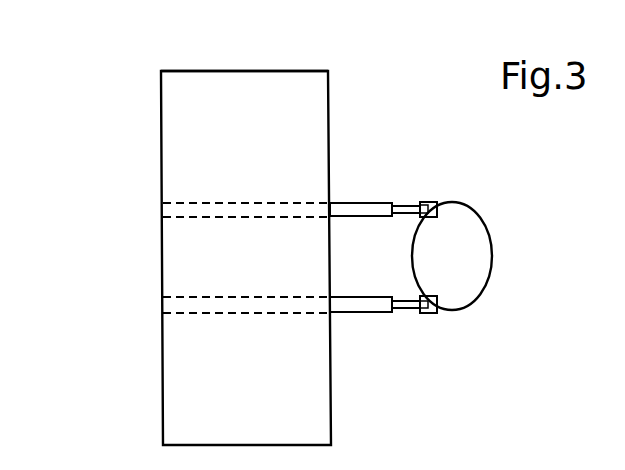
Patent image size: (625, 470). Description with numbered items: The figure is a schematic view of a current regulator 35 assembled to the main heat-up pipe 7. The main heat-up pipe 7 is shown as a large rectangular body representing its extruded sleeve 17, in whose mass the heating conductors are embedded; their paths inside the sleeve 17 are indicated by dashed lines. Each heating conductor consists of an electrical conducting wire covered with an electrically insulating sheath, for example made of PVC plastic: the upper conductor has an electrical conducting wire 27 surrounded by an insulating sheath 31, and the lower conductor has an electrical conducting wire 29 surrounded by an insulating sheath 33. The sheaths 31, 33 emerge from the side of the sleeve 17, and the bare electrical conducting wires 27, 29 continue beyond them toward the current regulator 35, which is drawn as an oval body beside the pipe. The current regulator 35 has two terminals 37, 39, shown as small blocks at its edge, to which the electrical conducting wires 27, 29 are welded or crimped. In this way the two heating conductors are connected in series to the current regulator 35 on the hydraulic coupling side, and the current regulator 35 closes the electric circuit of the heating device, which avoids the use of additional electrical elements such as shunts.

The main heat-up pipe 7 is at (134, 118).
The extruded sleeve 17 is at (265, 85).
The electrically insulating sheath 31 is at (350, 208).
The electrical conducting wire 27 is at (402, 208).
The terminal 37 is at (437, 202).
The current regulator 35 is at (482, 242).
The electrically insulating sheath 33 is at (357, 304).
The electrical conducting wire 29 is at (402, 307).
The terminal 39 is at (432, 310).